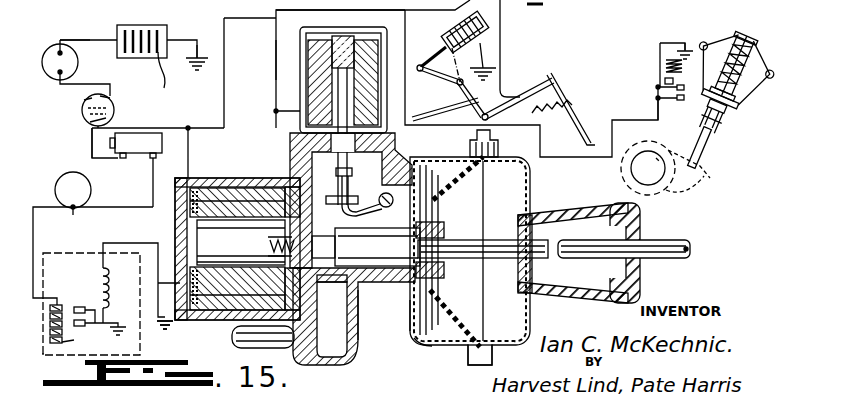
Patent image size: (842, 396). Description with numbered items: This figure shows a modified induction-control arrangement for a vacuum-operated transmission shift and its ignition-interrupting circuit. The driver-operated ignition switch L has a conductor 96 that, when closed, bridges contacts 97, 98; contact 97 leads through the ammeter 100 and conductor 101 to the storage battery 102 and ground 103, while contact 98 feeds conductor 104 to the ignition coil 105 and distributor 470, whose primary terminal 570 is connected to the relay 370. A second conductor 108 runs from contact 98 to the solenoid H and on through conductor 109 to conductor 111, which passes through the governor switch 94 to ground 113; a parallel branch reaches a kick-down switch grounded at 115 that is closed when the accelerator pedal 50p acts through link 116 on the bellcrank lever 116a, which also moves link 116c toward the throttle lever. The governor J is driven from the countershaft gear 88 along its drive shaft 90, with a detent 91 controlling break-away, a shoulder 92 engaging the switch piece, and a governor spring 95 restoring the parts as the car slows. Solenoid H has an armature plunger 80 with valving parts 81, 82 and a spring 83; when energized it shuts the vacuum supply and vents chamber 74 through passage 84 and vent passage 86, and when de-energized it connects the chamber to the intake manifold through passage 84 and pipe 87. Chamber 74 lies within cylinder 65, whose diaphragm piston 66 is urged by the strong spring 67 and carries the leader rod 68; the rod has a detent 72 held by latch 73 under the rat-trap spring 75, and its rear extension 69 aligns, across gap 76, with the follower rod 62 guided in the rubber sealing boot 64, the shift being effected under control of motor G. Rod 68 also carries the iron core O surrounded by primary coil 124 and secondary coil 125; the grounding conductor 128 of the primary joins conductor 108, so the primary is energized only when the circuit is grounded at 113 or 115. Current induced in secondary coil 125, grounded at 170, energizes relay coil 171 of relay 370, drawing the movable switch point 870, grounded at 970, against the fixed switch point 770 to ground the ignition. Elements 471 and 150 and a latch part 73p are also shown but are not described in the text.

The ammeter 100 is at (50, 50).
The conductor 101 is at (93, 40).
The storage battery 102 is at (155, 59).
The ground 103 is at (200, 58).
The conductor 104 is at (92, 141).
The coil 105 is at (135, 152).
The conductor 96 is at (112, 108).
The contact 97 is at (106, 96).
The contact 98 is at (106, 122).
The ignition switch L is at (84, 100).
The distributor 470 is at (60, 183).
The primary terminal 570 is at (73, 212).
The ground 970 is at (123, 330).
The relay coil 171 is at (106, 285).
The fixed switch point 770 is at (78, 305).
The relay contacts 471 is at (52, 331).
The relay 370 is at (44, 356).
The movable switch point 870 is at (70, 345).
The ground 170 is at (163, 331).
The core-piece O is at (214, 195).
The primary coil 124 is at (222, 196).
The secondary coil 125 is at (205, 300).
The plunger 73p is at (276, 236).
The vent passage 86 is at (296, 152).
The pipe 87 is at (236, 336).
The solenoid H is at (388, 45).
The spring 83 is at (372, 104).
The armature plunger 80 is at (372, 58).
The conductor 108 is at (276, 17).
The conductor 109 is at (276, 72).
The grounding conductor 128 is at (276, 128).
The passage 84 is at (372, 142).
The latch 73 is at (368, 226).
The detent 72 is at (338, 272).
The leader rod 68 is at (382, 282).
The spring 67 is at (407, 323).
The rear extension 69 is at (505, 245).
The rat-trap spring 75 is at (470, 142).
The cylinder 65 is at (498, 348).
The chamber 74 is at (415, 338).
The motor G is at (440, 346).
The diaphragm piston 66 is at (468, 354).
The rubber sealing boot 64 is at (640, 212).
The gap 76 is at (558, 292).
The follower rod 62 is at (676, 258).
The bellcrank lever 116a is at (428, 62).
The ground 115 is at (492, 66).
The valve 81 is at (438, 92).
The link 116c is at (445, 106).
The link 116 is at (540, 100).
The accelerator pedal 50p is at (565, 76).
The spring 150 is at (568, 97).
The conductor 111 is at (640, 120).
The ground 113 is at (690, 44).
The governor switch 94 is at (684, 100).
The countershaft gear 88 is at (698, 150).
The governor J is at (764, 48).
The governor spring 95 is at (762, 62).
The shoulder 92 is at (750, 105).
The detent 91 is at (724, 125).
The drive shaft 90 is at (700, 156).
The valve 82 is at (556, 5).